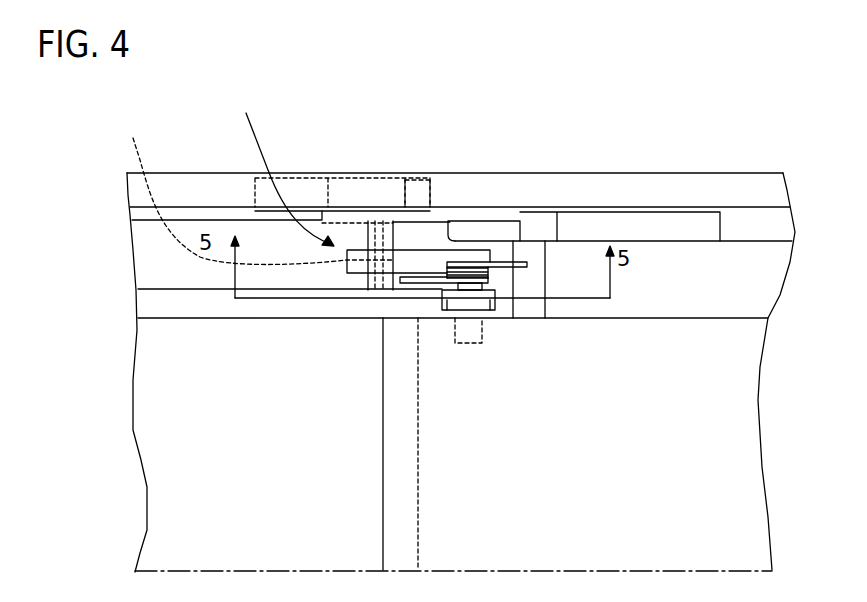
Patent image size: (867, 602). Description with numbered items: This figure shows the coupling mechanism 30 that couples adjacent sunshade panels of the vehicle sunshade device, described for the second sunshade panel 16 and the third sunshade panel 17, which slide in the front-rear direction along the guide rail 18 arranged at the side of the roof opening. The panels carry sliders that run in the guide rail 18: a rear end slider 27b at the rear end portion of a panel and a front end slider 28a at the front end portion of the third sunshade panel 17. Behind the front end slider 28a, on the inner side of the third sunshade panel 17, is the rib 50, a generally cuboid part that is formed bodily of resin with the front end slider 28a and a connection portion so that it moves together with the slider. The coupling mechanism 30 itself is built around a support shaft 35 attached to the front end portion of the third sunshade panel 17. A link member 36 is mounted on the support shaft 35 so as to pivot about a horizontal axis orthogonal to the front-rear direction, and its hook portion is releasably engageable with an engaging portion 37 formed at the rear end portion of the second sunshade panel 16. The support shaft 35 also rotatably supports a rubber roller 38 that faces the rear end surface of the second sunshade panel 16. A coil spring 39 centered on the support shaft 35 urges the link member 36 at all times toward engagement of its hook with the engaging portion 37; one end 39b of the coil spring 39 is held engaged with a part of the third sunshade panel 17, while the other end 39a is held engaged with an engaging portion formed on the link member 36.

The second sunshade panel 16 is at (243, 430).
The third sunshade panel 17 is at (552, 430).
The guide rail 18 is at (573, 190).
The rear end slider 27b is at (416, 186).
The front end slider 28a is at (303, 184).
The coupling mechanism 30 is at (280, 167).
The support shaft 35 is at (467, 340).
The link member 36 is at (415, 265).
The engaging portion 37 is at (255, 190).
The rubber roller 38 is at (487, 296).
The coil spring 39 is at (472, 265).
The other end of coil spring 39a is at (412, 283).
The one end of coil spring 39b is at (503, 267).
The rib 50 is at (640, 225).